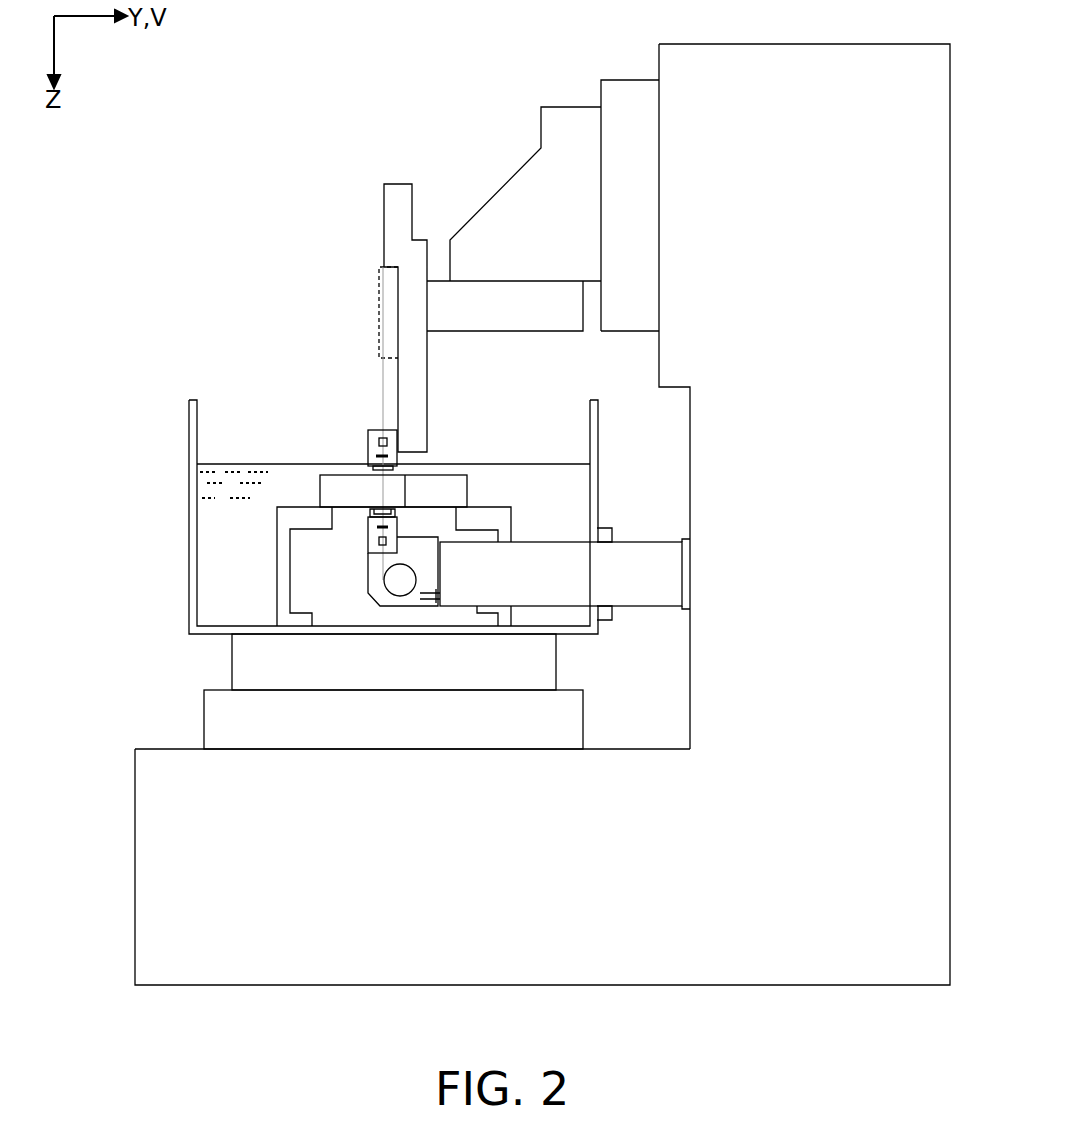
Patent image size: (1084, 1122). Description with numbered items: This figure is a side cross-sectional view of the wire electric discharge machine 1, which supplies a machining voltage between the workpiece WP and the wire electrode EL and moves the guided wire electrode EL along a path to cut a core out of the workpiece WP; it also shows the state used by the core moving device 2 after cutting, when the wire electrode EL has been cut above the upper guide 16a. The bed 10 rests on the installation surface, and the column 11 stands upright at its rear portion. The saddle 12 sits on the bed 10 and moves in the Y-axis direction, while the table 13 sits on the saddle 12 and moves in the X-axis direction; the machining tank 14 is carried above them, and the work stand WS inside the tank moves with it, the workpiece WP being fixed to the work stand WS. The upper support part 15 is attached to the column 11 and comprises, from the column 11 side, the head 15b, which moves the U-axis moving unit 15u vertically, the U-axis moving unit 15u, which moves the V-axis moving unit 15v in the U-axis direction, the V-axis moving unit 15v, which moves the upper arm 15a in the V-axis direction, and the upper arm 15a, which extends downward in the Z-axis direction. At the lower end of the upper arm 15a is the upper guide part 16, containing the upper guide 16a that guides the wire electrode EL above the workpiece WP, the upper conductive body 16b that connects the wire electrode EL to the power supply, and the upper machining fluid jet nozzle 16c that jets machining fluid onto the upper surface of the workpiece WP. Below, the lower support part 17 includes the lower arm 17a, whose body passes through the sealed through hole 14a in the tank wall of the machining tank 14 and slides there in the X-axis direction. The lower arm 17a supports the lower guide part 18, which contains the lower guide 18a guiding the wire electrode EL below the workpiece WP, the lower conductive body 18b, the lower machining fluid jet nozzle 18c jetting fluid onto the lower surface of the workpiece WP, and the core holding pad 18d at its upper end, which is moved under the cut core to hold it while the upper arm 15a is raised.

The wire electric discharge machine 1 is at (224, 140).
The core moving device 2 is at (380, 268).
The bed 10 is at (152, 865).
The column 11 is at (797, 60).
The saddle 12 is at (205, 725).
The table 13 is at (232, 658).
The machining tank 14 is at (598, 428).
The through hole 14a is at (594, 545).
The upper support part 15 is at (398, 170).
The upper arm 15a is at (384, 222).
The head 15b is at (630, 92).
The U-axis moving unit 15u is at (567, 107).
The V-axis moving unit 15v is at (490, 295).
The upper guide part 16 is at (383, 430).
The upper guide 16a is at (368, 452).
The upper conductive body 16b is at (376, 436).
The upper machining fluid jet nozzle 16c is at (398, 470).
The lower support part 17 is at (628, 612).
The lower arm 17a is at (545, 580).
The lower guide part 18 is at (370, 555).
The lower guide 18a is at (375, 527).
The lower conductive body 18b is at (378, 541).
The lower machining fluid jet nozzle 18c is at (368, 513).
The core holding pad 18d is at (398, 507).
The workpiece WP is at (335, 495).
The work stand WS is at (277, 598).
The wire electrode EL is at (383, 381).